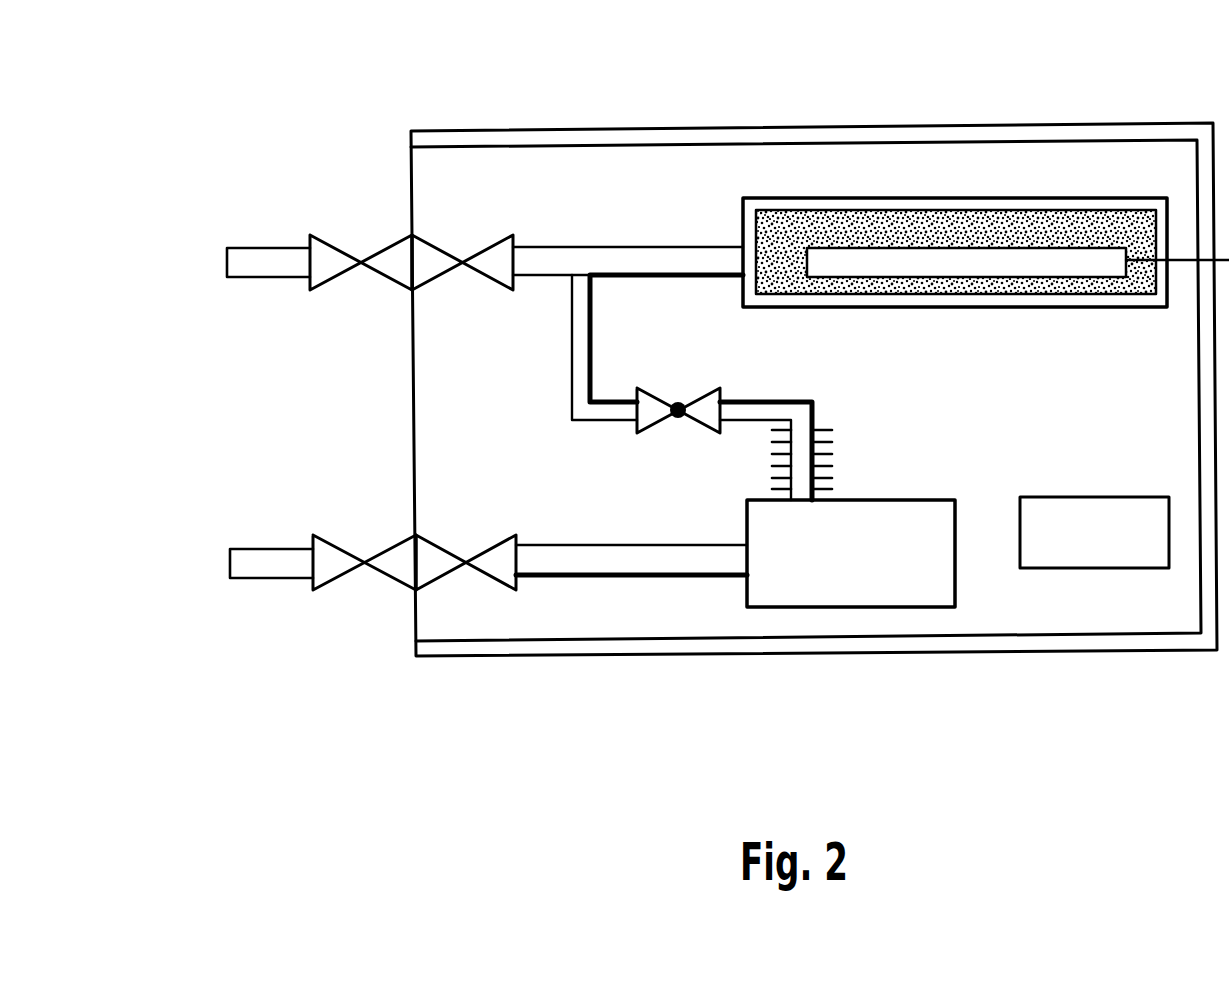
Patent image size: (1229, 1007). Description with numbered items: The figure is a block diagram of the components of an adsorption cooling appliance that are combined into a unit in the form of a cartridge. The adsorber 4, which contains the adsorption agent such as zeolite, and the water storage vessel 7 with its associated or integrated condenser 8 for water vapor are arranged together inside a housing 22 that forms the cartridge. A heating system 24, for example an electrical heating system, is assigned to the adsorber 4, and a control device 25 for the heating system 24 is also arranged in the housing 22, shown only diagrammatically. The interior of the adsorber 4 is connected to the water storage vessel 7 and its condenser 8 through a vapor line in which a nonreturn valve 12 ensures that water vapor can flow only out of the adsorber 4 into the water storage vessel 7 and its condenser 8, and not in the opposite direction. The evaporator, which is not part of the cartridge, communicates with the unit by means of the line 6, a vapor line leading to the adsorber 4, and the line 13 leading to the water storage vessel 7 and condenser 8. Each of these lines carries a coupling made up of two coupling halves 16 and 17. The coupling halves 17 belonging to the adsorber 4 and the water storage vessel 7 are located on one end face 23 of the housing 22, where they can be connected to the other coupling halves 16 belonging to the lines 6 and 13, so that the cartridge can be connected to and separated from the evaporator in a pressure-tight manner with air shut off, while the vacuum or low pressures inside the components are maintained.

The housing 22 is at (847, 133).
The end face 23 is at (412, 412).
The adsorber 4 is at (932, 175).
The heating system 24 is at (1010, 258).
The line 6 is at (240, 263).
The line 13 is at (247, 563).
The coupling half 16 is at (378, 250).
The coupling half 17 is at (480, 248).
The nonreturn valve 12 is at (678, 400).
The condenser 8 is at (813, 430).
The water storage vessel 7 is at (958, 573).
The control device 25 is at (1135, 545).